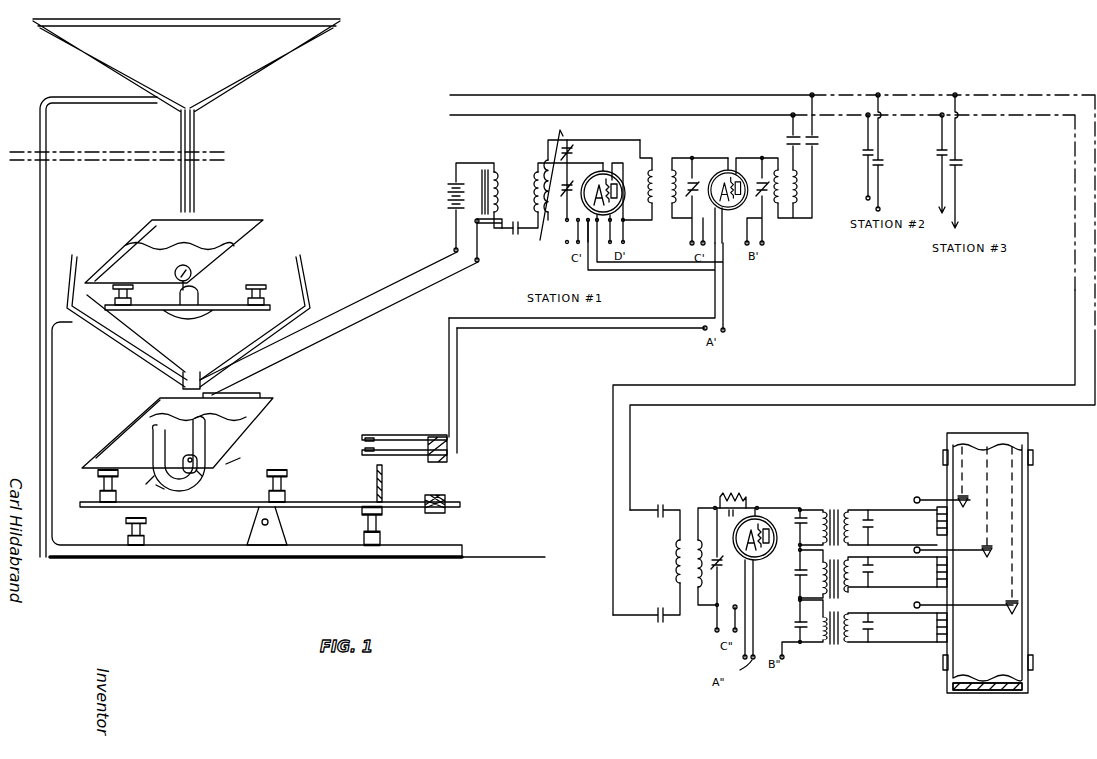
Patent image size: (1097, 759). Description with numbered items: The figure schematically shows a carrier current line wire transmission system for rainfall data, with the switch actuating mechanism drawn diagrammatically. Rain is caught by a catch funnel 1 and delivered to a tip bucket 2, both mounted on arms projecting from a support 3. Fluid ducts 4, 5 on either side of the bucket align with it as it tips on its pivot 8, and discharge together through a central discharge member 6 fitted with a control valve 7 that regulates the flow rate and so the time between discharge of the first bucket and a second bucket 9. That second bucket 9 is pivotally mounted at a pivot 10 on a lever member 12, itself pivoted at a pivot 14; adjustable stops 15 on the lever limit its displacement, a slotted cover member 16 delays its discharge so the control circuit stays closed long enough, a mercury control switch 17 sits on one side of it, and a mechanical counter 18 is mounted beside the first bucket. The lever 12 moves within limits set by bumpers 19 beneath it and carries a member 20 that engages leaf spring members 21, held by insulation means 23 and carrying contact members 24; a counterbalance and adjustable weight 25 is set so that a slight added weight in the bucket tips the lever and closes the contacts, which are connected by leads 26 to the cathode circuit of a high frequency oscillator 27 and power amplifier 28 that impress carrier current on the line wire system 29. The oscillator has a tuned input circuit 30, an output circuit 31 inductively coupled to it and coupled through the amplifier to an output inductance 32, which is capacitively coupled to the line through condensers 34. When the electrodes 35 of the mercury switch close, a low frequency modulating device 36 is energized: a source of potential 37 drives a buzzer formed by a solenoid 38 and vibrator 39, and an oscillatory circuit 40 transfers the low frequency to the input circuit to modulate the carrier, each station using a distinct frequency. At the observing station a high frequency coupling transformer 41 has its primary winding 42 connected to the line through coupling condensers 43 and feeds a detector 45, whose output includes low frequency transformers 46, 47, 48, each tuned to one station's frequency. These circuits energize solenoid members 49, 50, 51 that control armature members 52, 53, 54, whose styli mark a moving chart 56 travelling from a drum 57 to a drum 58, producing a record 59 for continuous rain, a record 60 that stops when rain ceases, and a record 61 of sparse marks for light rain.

The catch funnel 1 is at (266, 66).
The tip bucket 2 is at (237, 219).
The support 3 is at (32, 215).
The fluid duct 4 is at (126, 347).
The fluid duct 5 is at (244, 342).
The central discharge member 6 is at (212, 384).
The control valve 7 is at (180, 380).
The pivot 8 is at (187, 290).
The second bucket 9 is at (252, 427).
The pivot 10 is at (192, 457).
The lever member 12 is at (224, 510).
The pivot 14 is at (268, 522).
The adjustable bumpers or stops 15 is at (286, 478).
The slotted cover member 16 is at (110, 434).
The mercury control switch 17 is at (208, 484).
The mechanical counter 18 is at (174, 270).
The adjustable bumpers 19 is at (378, 514).
The member 20 is at (384, 488).
The leaf spring members 21 is at (398, 449).
The insulation means 23 is at (448, 464).
The contact members 24 is at (364, 450).
The counter balance member and adjustable weight 25 is at (444, 514).
The leads 26 is at (458, 384).
The high frequency oscillator 27 is at (614, 139).
The power amplifier 28 is at (754, 141).
The line wire system 29 is at (672, 104).
The tuned input circuit 30 is at (546, 232).
The output circuit 31 is at (660, 158).
The output inductance 32 is at (794, 208).
The condensers 34 is at (808, 148).
The electrodes 35 is at (216, 474).
The low frequency modulating device 36 is at (480, 153).
The source of potential 37 is at (448, 192).
The solenoid 38 is at (502, 177).
The armature or vibrator 39 is at (488, 231).
The oscillatory circuit 40 is at (516, 221).
The high frequency coupling transformer 41 is at (688, 612).
The primary winding 42 is at (674, 580).
The coupling condensers 43 is at (634, 632).
The detector 45 is at (776, 481).
The low frequency transformer 46 is at (830, 513).
The low frequency transformer 47 is at (834, 564).
The low frequency transformer system 48 is at (838, 612).
The solenoid member 49 is at (936, 527).
The solenoid member 50 is at (936, 588).
The solenoid member 51 is at (936, 643).
The armature member 52 is at (920, 500).
The armature member 53 is at (962, 549).
The armature member 54 is at (971, 604).
The moving tape or chart 56 is at (977, 619).
The drum 57 is at (1026, 696).
The drum 58 is at (1024, 441).
The record 59 is at (960, 470).
The graphic record 60 is at (990, 475).
The graphic record 61 is at (1014, 584).